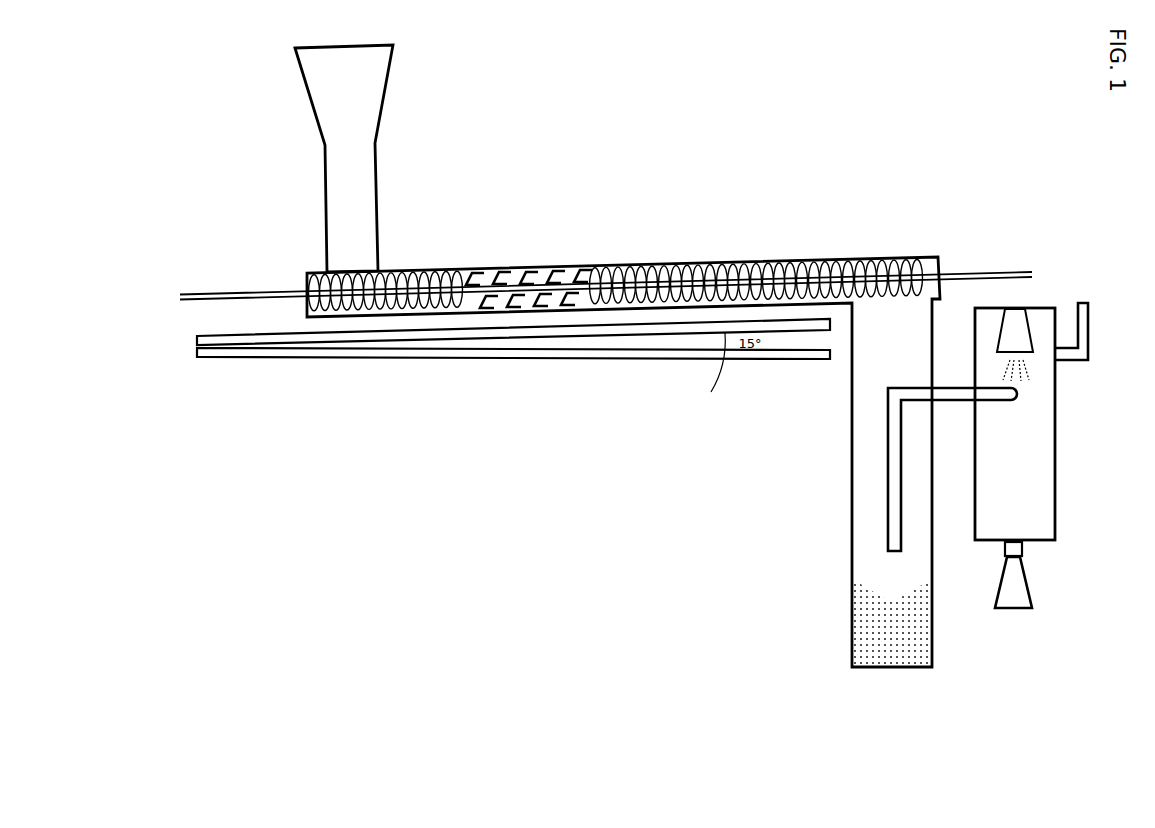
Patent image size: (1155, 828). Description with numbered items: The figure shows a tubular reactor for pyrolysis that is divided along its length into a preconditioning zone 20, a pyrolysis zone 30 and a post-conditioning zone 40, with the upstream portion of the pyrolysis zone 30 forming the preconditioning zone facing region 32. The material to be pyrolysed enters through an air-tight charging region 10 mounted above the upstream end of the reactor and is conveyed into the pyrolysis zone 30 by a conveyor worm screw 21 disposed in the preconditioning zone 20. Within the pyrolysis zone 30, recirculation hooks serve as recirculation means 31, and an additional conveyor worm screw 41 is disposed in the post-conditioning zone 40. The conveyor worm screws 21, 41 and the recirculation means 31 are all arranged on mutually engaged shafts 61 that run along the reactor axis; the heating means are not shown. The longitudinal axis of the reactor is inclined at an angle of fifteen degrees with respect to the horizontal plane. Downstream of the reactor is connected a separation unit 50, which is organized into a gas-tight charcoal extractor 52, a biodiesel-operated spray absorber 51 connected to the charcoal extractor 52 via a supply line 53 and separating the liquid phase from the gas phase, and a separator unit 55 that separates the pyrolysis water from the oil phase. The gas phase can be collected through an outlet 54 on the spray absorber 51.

The air-tight charging region 10 is at (360, 110).
The preconditioning zone 20 is at (305, 492).
The conveyor worm screw 21 is at (405, 270).
The pyrolysis zone 30 is at (463, 492).
The recirculation means 31 is at (498, 270).
The preconditioning zone facing region 32 is at (462, 605).
The post-conditioning zone 40 is at (928, 148).
The additional conveyor worm screw 41 is at (760, 265).
The separation unit 50 is at (728, 499).
The biodiesel-operated spray absorber 51 is at (1027, 450).
The gas-tight charcoal extractor 52 is at (903, 635).
The supply line 53 is at (893, 424).
The outlet 54 is at (1070, 352).
The separator unit 55 is at (1017, 598).
The shafts 61 is at (247, 293).